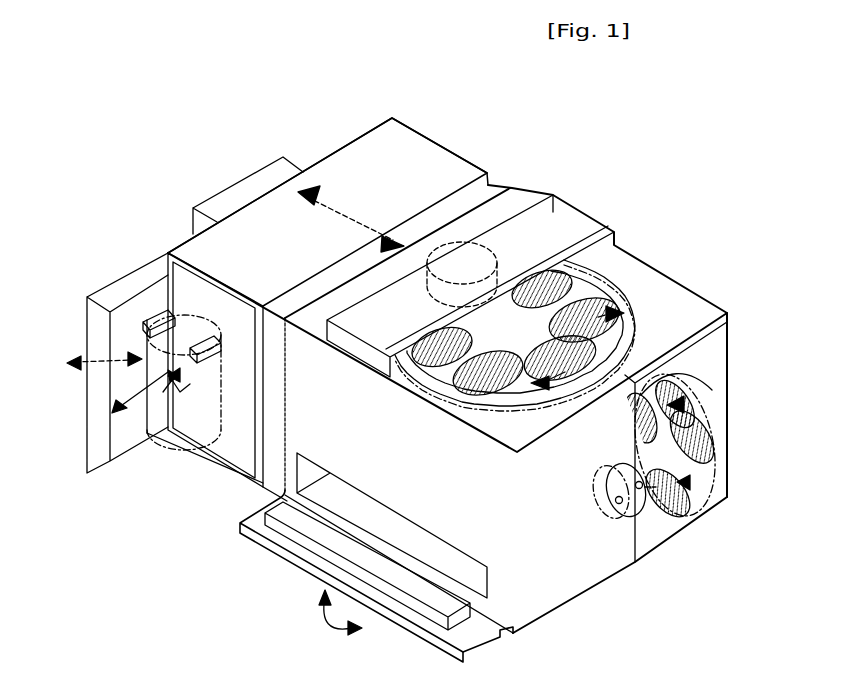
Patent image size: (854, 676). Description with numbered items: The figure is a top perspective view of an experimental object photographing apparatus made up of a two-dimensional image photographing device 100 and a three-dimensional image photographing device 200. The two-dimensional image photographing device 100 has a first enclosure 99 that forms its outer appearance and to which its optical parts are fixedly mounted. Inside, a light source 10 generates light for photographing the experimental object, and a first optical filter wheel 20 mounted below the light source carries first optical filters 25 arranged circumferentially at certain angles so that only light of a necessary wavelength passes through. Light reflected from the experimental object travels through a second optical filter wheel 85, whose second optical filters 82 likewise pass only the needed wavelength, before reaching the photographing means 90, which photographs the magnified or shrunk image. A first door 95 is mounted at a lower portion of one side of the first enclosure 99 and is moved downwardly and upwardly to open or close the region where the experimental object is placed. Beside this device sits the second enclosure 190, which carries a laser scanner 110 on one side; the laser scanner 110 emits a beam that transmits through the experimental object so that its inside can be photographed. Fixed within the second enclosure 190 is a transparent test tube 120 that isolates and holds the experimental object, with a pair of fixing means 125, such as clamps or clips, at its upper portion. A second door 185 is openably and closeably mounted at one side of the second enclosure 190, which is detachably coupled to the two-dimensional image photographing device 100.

The two-dimensional image photographing device 100 is at (628, 230).
The three-dimensional image photographing device 200 is at (440, 126).
The light source 10 is at (469, 245).
The first optical filter wheel 20 is at (640, 328).
The first optical filters 25 is at (593, 302).
The second optical filters 82 is at (700, 420).
The second optical filter wheel 85 is at (666, 360).
The photographing means 90 is at (668, 508).
The first door 95 is at (262, 536).
The first enclosure 99 is at (543, 560).
The laser scanner 110 is at (241, 190).
The test tube 120 is at (177, 540).
The fixing means 125 is at (147, 318).
The second door 185 is at (133, 422).
The second enclosure 190 is at (183, 238).